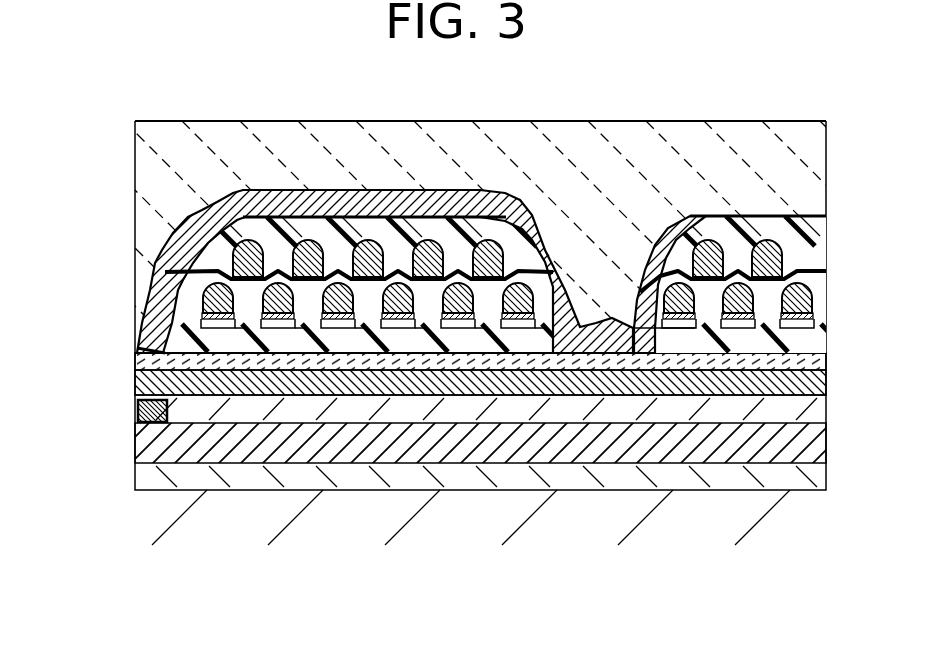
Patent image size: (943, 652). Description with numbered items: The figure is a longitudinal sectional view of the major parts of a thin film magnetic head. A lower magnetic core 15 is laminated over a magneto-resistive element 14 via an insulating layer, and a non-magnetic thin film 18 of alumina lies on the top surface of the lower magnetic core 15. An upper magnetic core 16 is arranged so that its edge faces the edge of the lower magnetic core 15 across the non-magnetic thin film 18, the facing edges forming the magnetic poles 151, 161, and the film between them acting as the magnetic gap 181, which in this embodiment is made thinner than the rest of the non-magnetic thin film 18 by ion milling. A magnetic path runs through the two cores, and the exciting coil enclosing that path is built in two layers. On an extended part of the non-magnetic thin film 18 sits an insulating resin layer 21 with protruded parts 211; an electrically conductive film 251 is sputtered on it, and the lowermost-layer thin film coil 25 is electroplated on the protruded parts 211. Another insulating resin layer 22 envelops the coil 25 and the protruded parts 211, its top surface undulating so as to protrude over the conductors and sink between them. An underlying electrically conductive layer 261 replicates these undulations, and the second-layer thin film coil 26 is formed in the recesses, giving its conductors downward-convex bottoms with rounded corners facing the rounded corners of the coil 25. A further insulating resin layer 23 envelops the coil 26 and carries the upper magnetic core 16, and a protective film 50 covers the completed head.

The magneto-resistive element 14 is at (137, 412).
The lower magnetic core 15 is at (535, 398).
The upper magnetic core 16 is at (240, 188).
The non-magnetic thin film 18 is at (478, 367).
The insulating resin layer 21 is at (420, 338).
The protruded parts 211 is at (345, 322).
The insulating resin layer 22 is at (247, 318).
The insulating resin layer 23 is at (297, 222).
The lowermost-layer thin film coil 25 is at (513, 290).
The electrically conductive film 251 is at (215, 320).
The second-layer thin film coil 26 is at (359, 243).
The underlying electrically conductive layer 261 is at (213, 243).
The protective film 50 is at (658, 126).
The magnetic pole 151 is at (150, 380).
The magnetic pole 161 is at (150, 342).
The magnetic gap 181 is at (158, 363).